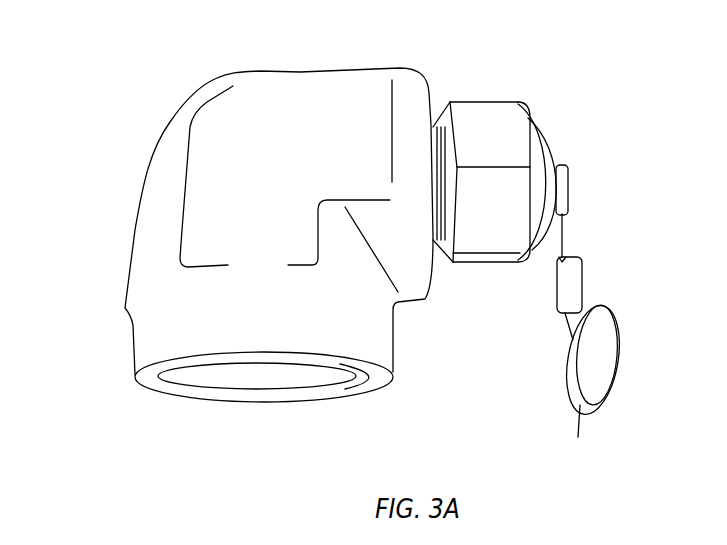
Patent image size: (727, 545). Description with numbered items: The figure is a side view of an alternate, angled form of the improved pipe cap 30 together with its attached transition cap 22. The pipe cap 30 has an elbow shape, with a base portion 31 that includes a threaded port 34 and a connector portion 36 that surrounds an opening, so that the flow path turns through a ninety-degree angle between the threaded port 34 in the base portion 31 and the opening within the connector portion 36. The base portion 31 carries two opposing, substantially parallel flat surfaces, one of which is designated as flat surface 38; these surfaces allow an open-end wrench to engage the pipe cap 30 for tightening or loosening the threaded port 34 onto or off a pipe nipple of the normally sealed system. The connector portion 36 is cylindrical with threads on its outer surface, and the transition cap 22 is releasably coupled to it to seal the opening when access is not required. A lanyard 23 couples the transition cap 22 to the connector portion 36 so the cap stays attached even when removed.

The pipe cap 30 is at (126, 47).
The base portion 31 is at (173, 300).
The flat surface 38 is at (324, 110).
The threaded port 34 is at (285, 395).
The connector portion 36 is at (435, 240).
The transition cap 22 is at (512, 191).
The lanyard 23 is at (573, 297).